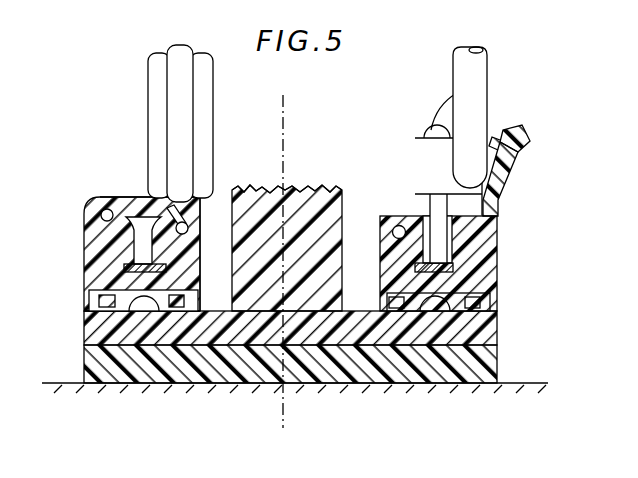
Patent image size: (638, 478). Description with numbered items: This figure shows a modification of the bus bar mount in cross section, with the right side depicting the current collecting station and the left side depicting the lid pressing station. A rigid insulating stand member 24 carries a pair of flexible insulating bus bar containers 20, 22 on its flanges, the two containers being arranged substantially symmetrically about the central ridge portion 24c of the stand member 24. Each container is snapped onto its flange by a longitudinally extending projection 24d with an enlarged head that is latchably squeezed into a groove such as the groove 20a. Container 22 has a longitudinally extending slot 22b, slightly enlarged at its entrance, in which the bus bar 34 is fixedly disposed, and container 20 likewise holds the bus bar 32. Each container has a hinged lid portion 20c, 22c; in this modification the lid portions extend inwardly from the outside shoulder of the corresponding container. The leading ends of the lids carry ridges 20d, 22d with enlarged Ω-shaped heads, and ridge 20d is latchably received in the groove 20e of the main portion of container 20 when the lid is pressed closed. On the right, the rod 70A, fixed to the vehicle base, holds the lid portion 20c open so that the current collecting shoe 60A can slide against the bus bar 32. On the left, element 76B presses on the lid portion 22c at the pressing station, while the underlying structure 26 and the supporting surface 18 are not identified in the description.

The base surface 18 is at (462, 392).
The bus bar container 20 is at (485, 253).
The groove 20a is at (478, 305).
The lid portion 20c is at (509, 180).
The ridge 20d is at (508, 130).
The groove 20e is at (398, 225).
The bus bar container 22 is at (183, 253).
The slot 22b is at (140, 241).
The lid portion 22c is at (147, 203).
The ridge 22d is at (188, 225).
The stand member 24 is at (328, 228).
The central ridge portion 24c is at (272, 190).
The projection 24d is at (105, 305).
The base plate 26 is at (178, 372).
The bus bar 32 is at (462, 270).
The bus bar 34 is at (122, 267).
The current collecting shoe 60A is at (440, 211).
The rod 70A is at (484, 86).
The roller assembly 76B is at (183, 76).